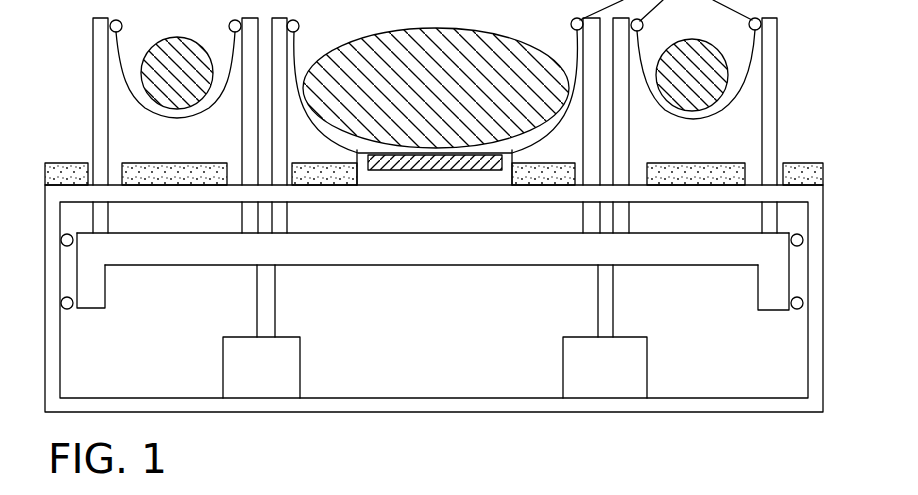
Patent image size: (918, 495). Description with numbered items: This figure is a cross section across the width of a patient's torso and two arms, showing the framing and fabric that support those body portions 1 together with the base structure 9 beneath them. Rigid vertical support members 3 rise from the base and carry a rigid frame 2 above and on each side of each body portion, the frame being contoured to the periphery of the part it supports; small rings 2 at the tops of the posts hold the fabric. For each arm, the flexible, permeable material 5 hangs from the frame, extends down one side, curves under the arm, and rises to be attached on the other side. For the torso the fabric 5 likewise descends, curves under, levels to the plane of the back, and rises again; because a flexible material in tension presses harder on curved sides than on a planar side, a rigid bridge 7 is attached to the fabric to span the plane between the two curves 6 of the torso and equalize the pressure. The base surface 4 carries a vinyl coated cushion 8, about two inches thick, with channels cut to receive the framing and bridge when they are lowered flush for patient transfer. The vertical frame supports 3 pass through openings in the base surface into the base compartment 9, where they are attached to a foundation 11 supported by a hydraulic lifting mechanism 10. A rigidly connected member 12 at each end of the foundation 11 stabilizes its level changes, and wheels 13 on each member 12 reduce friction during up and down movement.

The article being supported 1 is at (182, 57).
The rigid frame 2 is at (298, 22).
The vertical support member 3 is at (770, 72).
The base surface 4 is at (828, 168).
The flexible permeable material 5 is at (578, 55).
The curves of the torso 6 is at (355, 156).
The rigid bridge 7 is at (425, 169).
The vinyl coated cushion 8 is at (703, 167).
The base structure 9 is at (434, 298).
The lifting mechanism 10 is at (282, 368).
The foundation 11 is at (337, 255).
The rigidly connected member 12 is at (98, 288).
The wheels 13 is at (70, 310).